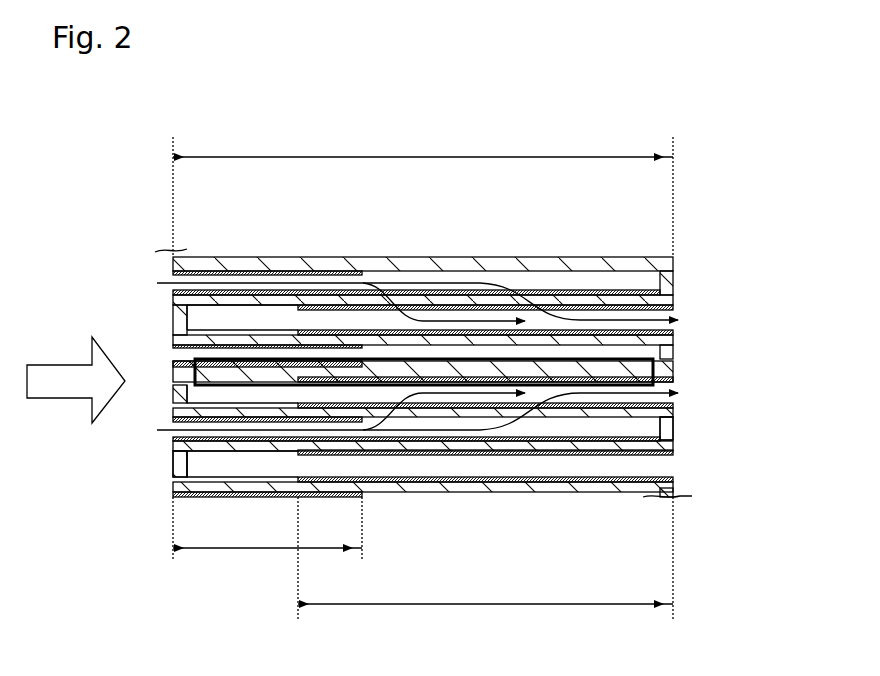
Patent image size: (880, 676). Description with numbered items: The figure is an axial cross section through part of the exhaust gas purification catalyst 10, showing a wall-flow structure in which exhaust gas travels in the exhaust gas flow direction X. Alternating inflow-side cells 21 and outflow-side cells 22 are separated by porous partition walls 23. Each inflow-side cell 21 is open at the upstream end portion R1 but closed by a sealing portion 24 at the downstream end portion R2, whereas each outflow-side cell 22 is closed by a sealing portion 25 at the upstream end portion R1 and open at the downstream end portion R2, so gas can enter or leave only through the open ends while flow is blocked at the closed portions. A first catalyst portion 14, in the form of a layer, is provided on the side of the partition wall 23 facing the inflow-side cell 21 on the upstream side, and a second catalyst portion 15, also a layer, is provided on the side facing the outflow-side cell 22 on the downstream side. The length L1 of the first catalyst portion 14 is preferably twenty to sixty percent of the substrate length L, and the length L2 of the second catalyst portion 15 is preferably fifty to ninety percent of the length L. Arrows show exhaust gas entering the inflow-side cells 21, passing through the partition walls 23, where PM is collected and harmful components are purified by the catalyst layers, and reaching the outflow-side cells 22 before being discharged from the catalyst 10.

The exhaust gas purification catalyst 10 is at (660, 112).
The first catalyst portion 14 is at (237, 441).
The second catalyst portion 15 is at (480, 456).
The inflow-side cell 21 is at (610, 285).
The outflow-side cell 22 is at (283, 318).
The partition wall 23 is at (477, 258).
The sealing portion 24 is at (664, 424).
The sealing portion 25 is at (176, 467).
The upstream end portion R1 is at (168, 350).
The downstream end portion R2 is at (675, 311).
The exhaust gas flow direction X is at (57, 365).
The length of the substrate L is at (423, 189).
The length of the first catalyst layer L1 is at (267, 558).
The length of the second catalyst layer L2 is at (485, 568).